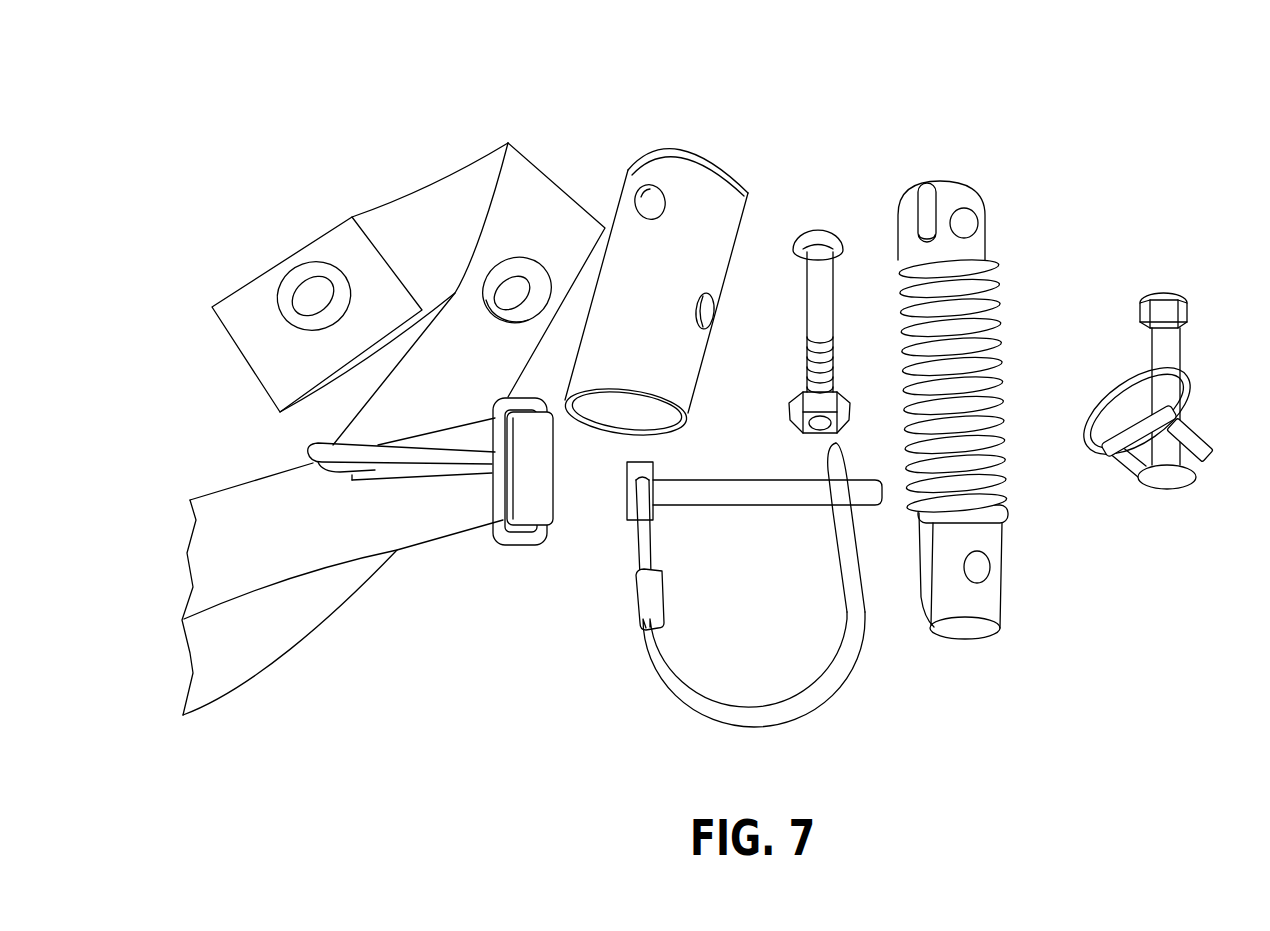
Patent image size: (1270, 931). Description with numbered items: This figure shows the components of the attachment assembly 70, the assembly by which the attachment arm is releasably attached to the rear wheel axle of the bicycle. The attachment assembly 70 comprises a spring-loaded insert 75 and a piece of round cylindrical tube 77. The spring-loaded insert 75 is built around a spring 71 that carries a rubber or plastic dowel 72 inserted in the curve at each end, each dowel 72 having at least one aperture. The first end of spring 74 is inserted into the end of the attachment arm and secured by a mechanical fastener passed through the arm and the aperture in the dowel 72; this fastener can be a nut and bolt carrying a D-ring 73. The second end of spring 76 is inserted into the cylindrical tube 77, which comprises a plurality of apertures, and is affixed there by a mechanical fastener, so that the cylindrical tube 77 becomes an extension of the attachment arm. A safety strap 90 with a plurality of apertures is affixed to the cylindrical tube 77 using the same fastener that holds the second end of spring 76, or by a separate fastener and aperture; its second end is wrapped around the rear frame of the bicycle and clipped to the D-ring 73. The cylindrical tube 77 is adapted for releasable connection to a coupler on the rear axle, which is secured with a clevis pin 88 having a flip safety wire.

The attachment assembly 70 is at (803, 133).
The spring 71 is at (983, 340).
The dowel 72 is at (990, 603).
The D-ring 73 is at (1187, 373).
The first end of spring 74 is at (943, 190).
The spring-loaded insert 75 is at (1000, 225).
The second end of spring 76 is at (933, 621).
The cylindrical tube 77 is at (698, 182).
The clevis pin 88 is at (829, 686).
The safety strap 90 is at (322, 550).